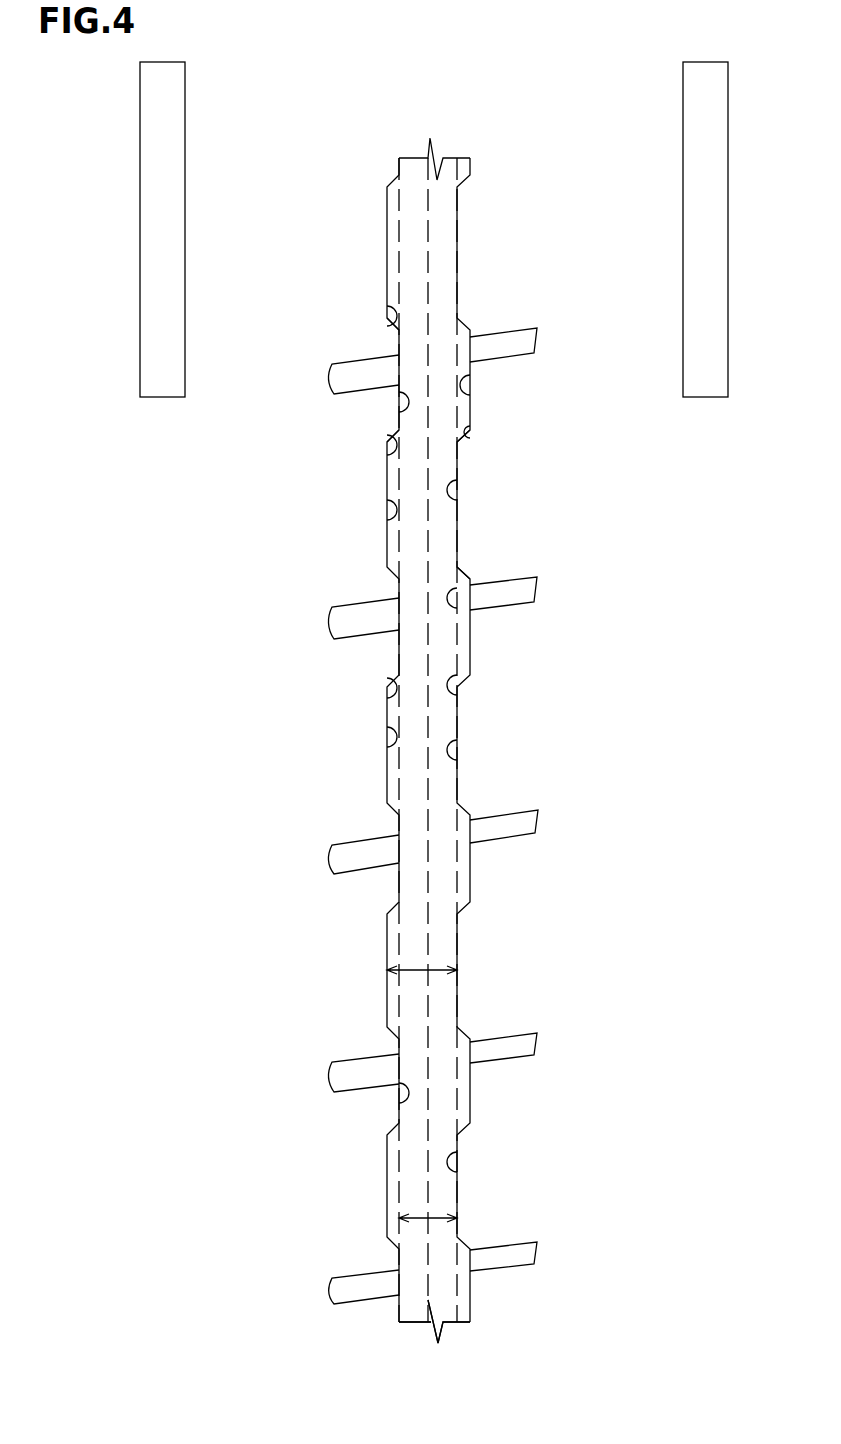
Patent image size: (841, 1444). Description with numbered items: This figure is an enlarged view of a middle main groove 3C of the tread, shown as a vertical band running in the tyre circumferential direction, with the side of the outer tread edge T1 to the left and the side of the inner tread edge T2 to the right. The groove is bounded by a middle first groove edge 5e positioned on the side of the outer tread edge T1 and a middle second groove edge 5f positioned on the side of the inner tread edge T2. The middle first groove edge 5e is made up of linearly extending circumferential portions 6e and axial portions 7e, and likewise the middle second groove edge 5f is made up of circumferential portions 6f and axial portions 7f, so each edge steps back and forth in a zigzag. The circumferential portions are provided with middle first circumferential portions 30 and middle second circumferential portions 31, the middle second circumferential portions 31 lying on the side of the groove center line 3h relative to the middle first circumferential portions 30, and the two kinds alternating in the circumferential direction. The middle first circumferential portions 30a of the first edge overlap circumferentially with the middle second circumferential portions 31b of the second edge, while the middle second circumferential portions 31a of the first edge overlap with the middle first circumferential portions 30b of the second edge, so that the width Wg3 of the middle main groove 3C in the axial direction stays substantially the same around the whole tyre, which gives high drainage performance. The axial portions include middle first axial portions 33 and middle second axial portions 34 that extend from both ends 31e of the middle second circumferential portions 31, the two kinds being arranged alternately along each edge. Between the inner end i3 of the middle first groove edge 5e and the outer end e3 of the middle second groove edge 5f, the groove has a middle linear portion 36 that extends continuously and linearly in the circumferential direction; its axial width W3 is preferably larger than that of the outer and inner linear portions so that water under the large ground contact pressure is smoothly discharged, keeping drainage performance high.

The middle main groove 3C is at (448, 130).
The groove center line 3h is at (427, 207).
The inner end i3 is at (400, 1100).
The outer end e3 is at (458, 1157).
The middle first circumferential portions 30 is at (419, 816).
The middle first circumferential portions of the middle first groove edge 30a is at (391, 520).
The middle first circumferential portions of the middle second groove edge 30b is at (470, 395).
The middle second circumferential portions 31 is at (415, 464).
The middle second circumferential portions of the middle first groove edge 31a is at (396, 405).
The middle second circumferential portions of the middle second groove edge 31b is at (460, 500).
The both ends of the middle second circumferential portions 31e is at (395, 331).
The middle first axial portions 33 is at (392, 310).
The middle second axial portions 34 is at (390, 452).
The middle first groove edge 5e is at (322, 728).
The middle second groove edge 5f is at (525, 735).
The axial portions of the middle first groove edge 7e is at (386, 694).
The circumferential portions of the middle first groove edge 6e is at (386, 745).
The axial portions of the middle second groove edge 7f is at (459, 697).
The circumferential portions of the middle second groove edge 6f is at (499, 764).
The width of the middle main groove Wg3 is at (418, 968).
The width of the middle linear portion W3 is at (448, 1216).
The middle linear portion 36 is at (415, 1290).
The outer tread edge T1 is at (162, 229).
The inner tread edge T2 is at (705, 229).